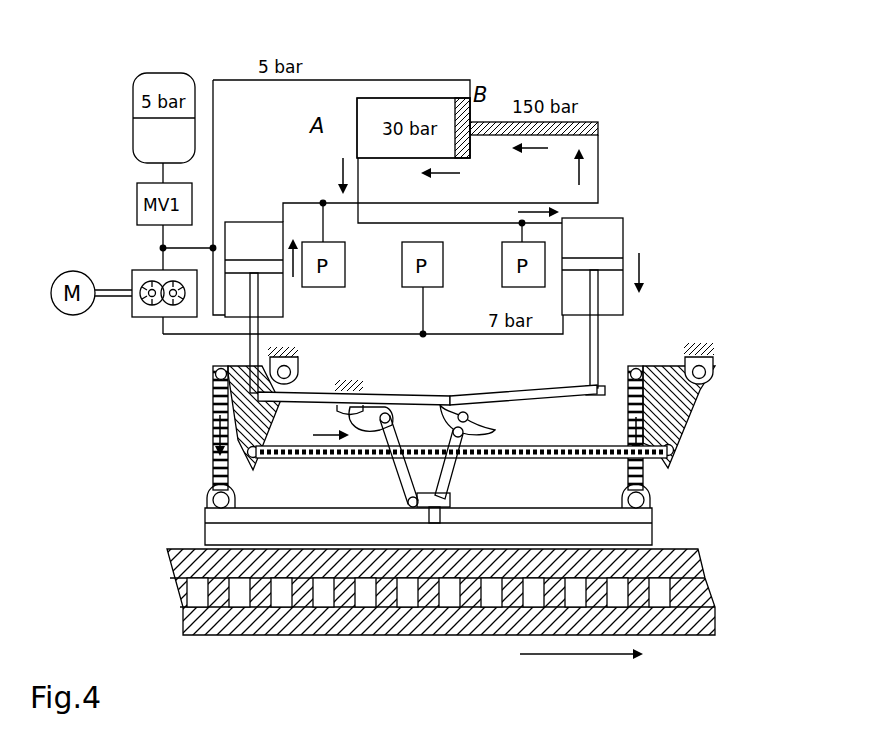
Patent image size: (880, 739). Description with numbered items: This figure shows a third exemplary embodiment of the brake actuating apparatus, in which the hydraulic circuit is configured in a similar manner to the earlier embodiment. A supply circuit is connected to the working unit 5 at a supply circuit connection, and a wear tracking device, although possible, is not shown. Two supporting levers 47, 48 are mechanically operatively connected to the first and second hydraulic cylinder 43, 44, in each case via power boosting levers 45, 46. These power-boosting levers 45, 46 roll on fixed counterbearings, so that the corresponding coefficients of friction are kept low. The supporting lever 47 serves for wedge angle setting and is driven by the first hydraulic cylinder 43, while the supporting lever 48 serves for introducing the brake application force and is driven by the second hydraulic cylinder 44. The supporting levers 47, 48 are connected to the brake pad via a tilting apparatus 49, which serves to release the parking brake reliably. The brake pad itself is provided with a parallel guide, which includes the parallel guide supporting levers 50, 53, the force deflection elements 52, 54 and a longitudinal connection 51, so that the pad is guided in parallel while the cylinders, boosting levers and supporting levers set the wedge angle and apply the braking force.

The working unit 5 is at (408, 98).
The first hydraulic cylinder 43 is at (625, 228).
The second hydraulic cylinder 44 is at (262, 222).
The power boosting lever 45 is at (313, 402).
The power boosting lever 46 is at (543, 395).
The supporting lever 47 is at (393, 470).
The supporting lever 48 is at (460, 463).
The tilting apparatus 49 is at (450, 497).
The parallel guide supporting lever 50 is at (646, 476).
The longitudinal connection 51 is at (655, 462).
The force deflection element 52 is at (692, 407).
The parallel guide supporting lever 53 is at (212, 428).
The force deflection element 54 is at (213, 397).